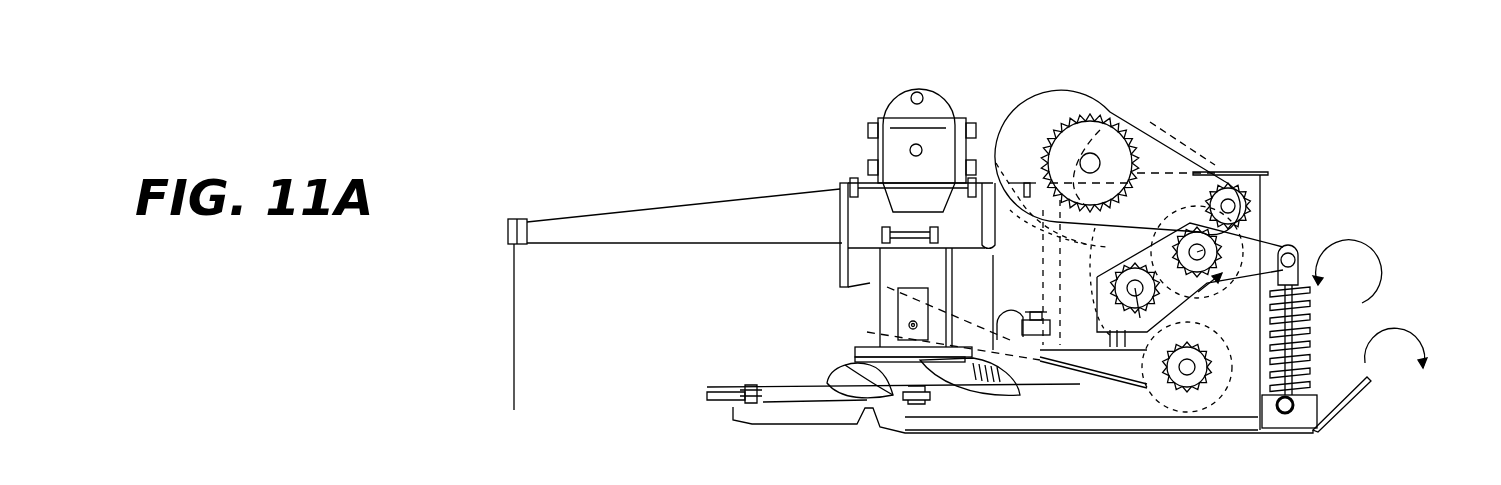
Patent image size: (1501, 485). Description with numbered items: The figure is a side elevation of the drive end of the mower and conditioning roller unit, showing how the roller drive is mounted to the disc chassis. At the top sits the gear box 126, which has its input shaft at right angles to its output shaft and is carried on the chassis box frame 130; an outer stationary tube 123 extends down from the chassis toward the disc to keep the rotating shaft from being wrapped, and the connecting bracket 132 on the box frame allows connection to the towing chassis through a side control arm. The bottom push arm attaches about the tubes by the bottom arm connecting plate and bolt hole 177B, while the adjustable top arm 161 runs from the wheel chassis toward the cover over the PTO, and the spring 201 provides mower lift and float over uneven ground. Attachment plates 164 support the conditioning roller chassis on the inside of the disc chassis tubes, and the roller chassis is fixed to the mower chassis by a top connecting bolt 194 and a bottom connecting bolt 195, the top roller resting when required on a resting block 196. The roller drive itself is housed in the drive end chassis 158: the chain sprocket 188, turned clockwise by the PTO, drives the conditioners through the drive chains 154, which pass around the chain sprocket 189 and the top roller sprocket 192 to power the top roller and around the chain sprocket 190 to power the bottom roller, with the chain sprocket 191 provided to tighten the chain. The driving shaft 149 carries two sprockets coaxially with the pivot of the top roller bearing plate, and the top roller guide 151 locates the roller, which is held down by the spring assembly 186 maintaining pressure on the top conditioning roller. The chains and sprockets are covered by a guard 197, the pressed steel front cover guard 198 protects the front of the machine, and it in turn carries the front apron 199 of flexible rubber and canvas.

The outer stationary tube 123 is at (868, 283).
The gear box 126 is at (868, 154).
The chassis box frame 130 is at (952, 200).
The connecting bracket 132 is at (882, 235).
The driving shaft 149 is at (1263, 250).
The top roller guide 151 is at (1268, 247).
The drive chains 154 is at (1165, 128).
The drive end chassis 158 is at (1258, 172).
The adjustable top arm 161 is at (792, 484).
The attachment plates 164 is at (1039, 245).
The bottom arm connecting plate and bolt hole 177B is at (908, 323).
The spring assembly 186 is at (1307, 322).
The chain sprocket 188 is at (1122, 115).
The chain sprocket 189 is at (1212, 298).
The chain sprocket 190 is at (1183, 372).
The chain sprocket 191 is at (1200, 196).
The top roller sprocket 192 is at (1118, 330).
The top connecting bolt 194 is at (1028, 190).
The bottom connecting bolt 195 is at (997, 340).
The resting block 196 is at (1127, 322).
The guard 197 is at (1088, 98).
The front cover guard 198 is at (591, 206).
The front apron 199 is at (515, 312).
The spring 201 is at (823, 478).